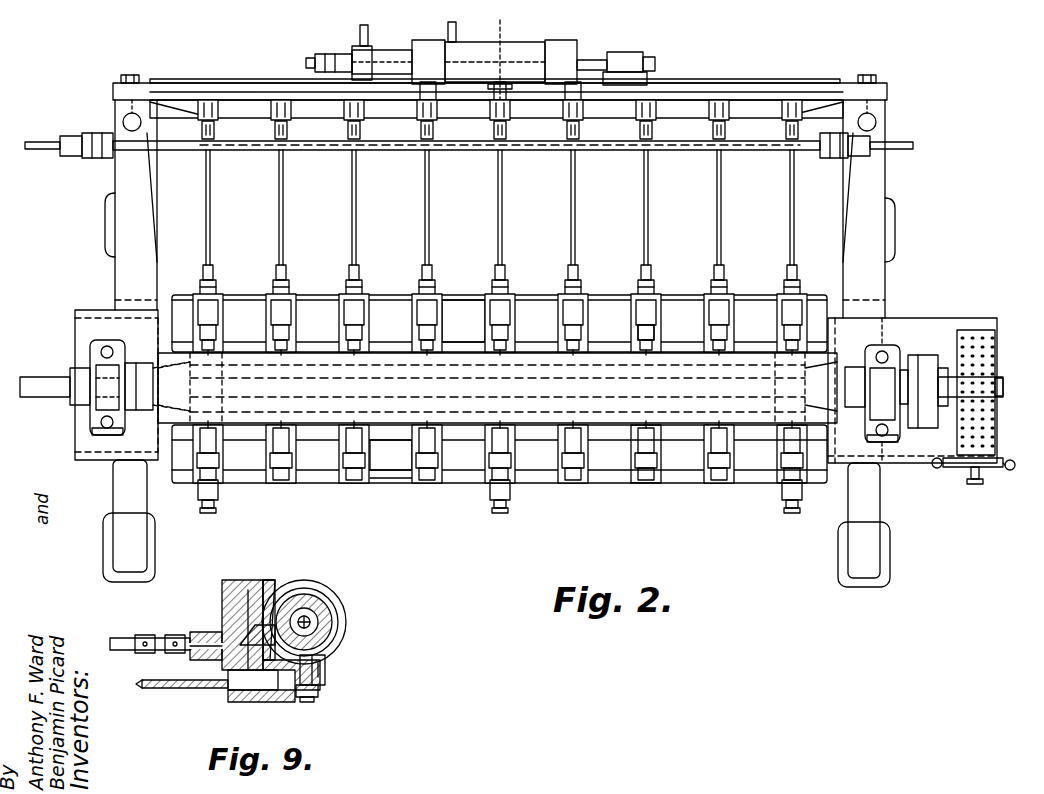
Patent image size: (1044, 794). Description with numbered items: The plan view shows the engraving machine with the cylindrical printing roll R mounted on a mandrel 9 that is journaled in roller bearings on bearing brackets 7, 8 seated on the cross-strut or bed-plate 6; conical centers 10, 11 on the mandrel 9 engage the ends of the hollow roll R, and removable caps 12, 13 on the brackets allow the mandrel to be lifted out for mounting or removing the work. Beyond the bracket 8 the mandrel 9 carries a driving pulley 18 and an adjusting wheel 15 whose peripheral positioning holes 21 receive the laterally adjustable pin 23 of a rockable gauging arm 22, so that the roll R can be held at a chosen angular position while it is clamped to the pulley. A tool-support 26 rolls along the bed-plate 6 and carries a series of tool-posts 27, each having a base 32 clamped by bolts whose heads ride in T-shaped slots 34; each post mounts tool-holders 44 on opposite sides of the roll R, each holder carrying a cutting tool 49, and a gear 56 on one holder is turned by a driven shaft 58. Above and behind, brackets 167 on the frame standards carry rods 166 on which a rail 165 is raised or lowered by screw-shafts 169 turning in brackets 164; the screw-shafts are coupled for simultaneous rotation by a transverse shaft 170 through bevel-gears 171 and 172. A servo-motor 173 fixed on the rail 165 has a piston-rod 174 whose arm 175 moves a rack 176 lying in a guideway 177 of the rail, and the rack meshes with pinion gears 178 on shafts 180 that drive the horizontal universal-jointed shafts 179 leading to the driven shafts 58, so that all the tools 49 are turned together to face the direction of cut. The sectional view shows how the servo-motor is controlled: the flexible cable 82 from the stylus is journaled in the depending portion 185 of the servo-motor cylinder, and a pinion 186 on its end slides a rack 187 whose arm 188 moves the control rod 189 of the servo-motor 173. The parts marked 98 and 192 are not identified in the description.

In FIG. 2, the cross-strut 6 is at (85, 326).
In FIG. 2, the bearing bracket 7 is at (90, 428).
In FIG. 2, the bearing bracket 8 is at (888, 463).
In FIG. 2, the mandrel 9 is at (50, 380).
In FIG. 2, the conical center 10 is at (170, 365).
In FIG. 2, the conical center 11 is at (822, 360).
In FIG. 2, the removable cap 12 is at (98, 400).
In FIG. 2, the removable cap 13 is at (895, 358).
In FIG. 2, the adjusting wheel 15 is at (978, 336).
In FIG. 2, the driving pulley 18 is at (920, 420).
In FIG. 2, the positioning holes 21 is at (980, 345).
In FIG. 2, the gauging arm 22 is at (952, 468).
In FIG. 2, the adjustable pin 23 is at (978, 478).
In FIG. 2, the tool-support 26 is at (455, 310).
In FIG. 2, the tool-posts 27 is at (345, 312).
In FIG. 2, the base 32 is at (391, 455).
In FIG. 2, the T-shaped slots 34 is at (395, 478).
In FIG. 2, the tool-holders 44 is at (650, 335).
In FIG. 2, the cutting tool 49 is at (573, 355).
In FIG. 2, the gear 56 is at (725, 292).
In FIG. 2, the driven shaft 58 is at (650, 283).
In FIG. 9, the flexible cable 82 is at (150, 690).
In FIG. 2, the pulley 98 is at (928, 355).
In FIG. 2, the brackets 164 is at (140, 145).
In FIG. 2, the rail 165 is at (690, 104).
In FIG. 9, the rail 165 is at (238, 590).
In FIG. 2, the rods 166 is at (124, 121).
In FIG. 2, the brackets 167 is at (122, 276).
In FIG. 2, the screw-shafts 169 is at (125, 158).
In FIG. 2, the transverse shaft 170 is at (375, 150).
In FIG. 2, the bevel-gears 171 is at (122, 158).
In FIG. 2, the bevel-gears 172 is at (152, 142).
In FIG. 2, the servo-motor 173 is at (572, 58).
In FIG. 9, the servo-motor 173 is at (345, 608).
In FIG. 2, the piston-rod 174 is at (595, 60).
In FIG. 2, the arm 175 is at (630, 60).
In FIG. 2, the rack 176 is at (695, 100).
In FIG. 9, the rack 176 is at (250, 625).
In FIG. 9, the guideway 177 is at (248, 610).
In FIG. 2, the pinion gears 178 is at (278, 100).
In FIG. 9, the pinion gears 178 is at (268, 596).
In FIG. 2, the horizontal shafts 179 is at (352, 214).
In FIG. 9, the horizontal shafts 179 is at (124, 640).
In FIG. 2, the pinion shafts 180 is at (728, 110).
In FIG. 9, the pinion shafts 180 is at (212, 648).
In FIG. 9, the depending portion 185 is at (270, 702).
In FIG. 2, the pinion 186 is at (504, 88).
In FIG. 9, the pinion 186 is at (310, 692).
In FIG. 2, the rack 187 is at (470, 55).
In FIG. 9, the rack 187 is at (322, 670).
In FIG. 2, the arm 188 is at (316, 60).
In FIG. 9, the arm 188 is at (340, 630).
In FIG. 2, the control rod 189 is at (344, 58).
In FIG. 9, the control rod 189 is at (310, 616).
In FIG. 2, the end tool holder 192 is at (790, 290).
In FIG. 2, the printing roll R is at (468, 425).